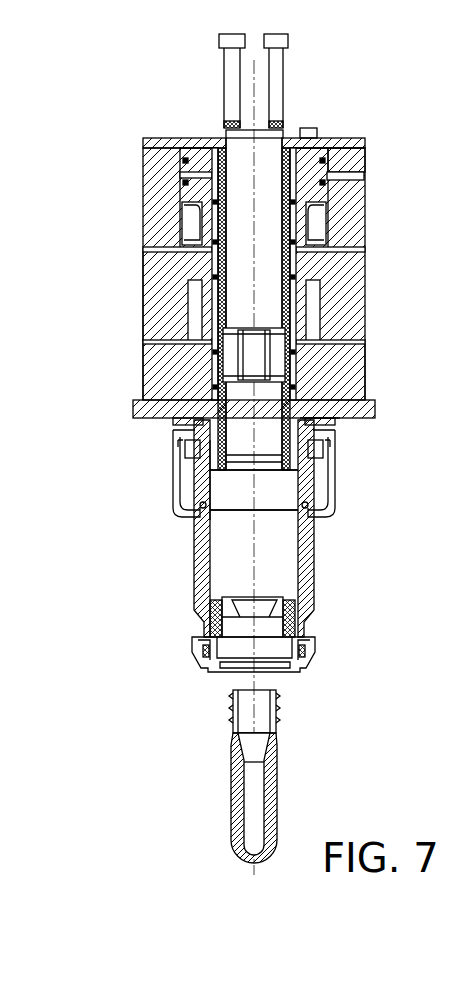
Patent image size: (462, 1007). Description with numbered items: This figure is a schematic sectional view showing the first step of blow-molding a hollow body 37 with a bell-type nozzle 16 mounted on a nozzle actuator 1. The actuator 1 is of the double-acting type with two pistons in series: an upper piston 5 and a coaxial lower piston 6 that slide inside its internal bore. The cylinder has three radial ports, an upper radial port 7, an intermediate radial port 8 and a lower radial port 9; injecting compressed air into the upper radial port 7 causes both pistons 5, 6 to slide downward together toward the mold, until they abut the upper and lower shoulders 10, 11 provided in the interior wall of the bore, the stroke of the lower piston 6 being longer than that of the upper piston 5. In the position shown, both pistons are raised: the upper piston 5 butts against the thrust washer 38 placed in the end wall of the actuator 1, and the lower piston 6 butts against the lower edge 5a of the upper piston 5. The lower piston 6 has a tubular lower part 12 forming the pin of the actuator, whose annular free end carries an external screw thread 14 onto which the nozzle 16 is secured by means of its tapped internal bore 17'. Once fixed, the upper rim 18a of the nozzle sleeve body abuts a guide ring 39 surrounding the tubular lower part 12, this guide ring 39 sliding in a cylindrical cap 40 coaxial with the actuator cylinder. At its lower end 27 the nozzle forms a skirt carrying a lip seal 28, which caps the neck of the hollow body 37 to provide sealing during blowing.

The nozzle actuator 1 is at (383, 279).
The upper piston 5 is at (193, 188).
The lower edge of the upper piston 5a is at (205, 247).
The lower piston 6 is at (313, 255).
The upper radial port 7 is at (355, 178).
The intermediate radial port 8 is at (160, 248).
The lower radial port 9 is at (160, 340).
The upper shoulder 10 is at (327, 232).
The lower shoulder 11 is at (313, 340).
The tubular lower part 12 is at (315, 438).
The screw thread 14 is at (307, 503).
The nozzle of the bell type 16 is at (325, 566).
The tapped internal bore 17' is at (164, 499).
The upper rim of the sleeve body 18a is at (316, 464).
The lower end 27 is at (195, 645).
The lip seal 28 is at (217, 672).
The hollow body 37 is at (277, 788).
The thrust washer 38 is at (300, 172).
The guide ring 39 is at (186, 462).
The cylindrical cap 40 is at (172, 482).